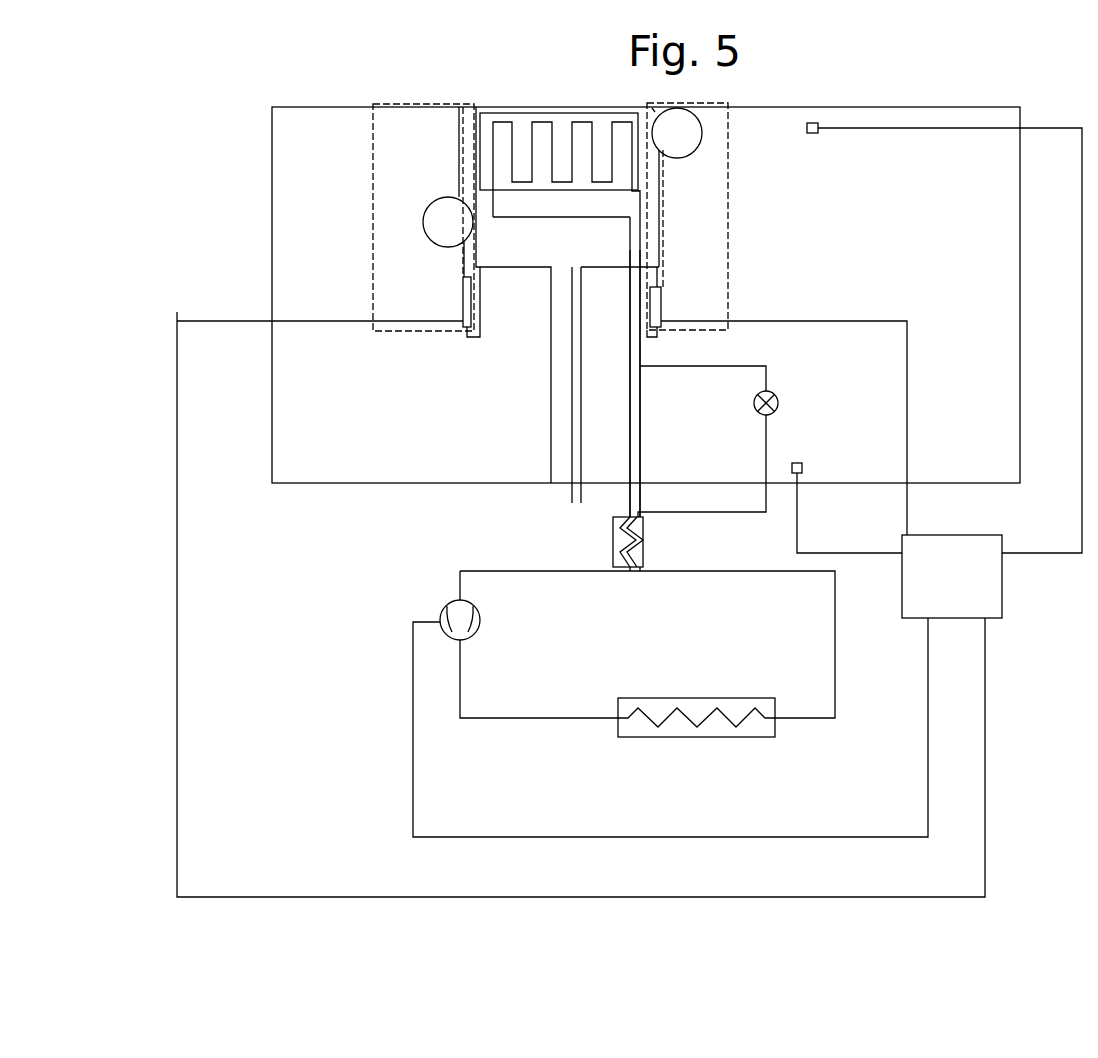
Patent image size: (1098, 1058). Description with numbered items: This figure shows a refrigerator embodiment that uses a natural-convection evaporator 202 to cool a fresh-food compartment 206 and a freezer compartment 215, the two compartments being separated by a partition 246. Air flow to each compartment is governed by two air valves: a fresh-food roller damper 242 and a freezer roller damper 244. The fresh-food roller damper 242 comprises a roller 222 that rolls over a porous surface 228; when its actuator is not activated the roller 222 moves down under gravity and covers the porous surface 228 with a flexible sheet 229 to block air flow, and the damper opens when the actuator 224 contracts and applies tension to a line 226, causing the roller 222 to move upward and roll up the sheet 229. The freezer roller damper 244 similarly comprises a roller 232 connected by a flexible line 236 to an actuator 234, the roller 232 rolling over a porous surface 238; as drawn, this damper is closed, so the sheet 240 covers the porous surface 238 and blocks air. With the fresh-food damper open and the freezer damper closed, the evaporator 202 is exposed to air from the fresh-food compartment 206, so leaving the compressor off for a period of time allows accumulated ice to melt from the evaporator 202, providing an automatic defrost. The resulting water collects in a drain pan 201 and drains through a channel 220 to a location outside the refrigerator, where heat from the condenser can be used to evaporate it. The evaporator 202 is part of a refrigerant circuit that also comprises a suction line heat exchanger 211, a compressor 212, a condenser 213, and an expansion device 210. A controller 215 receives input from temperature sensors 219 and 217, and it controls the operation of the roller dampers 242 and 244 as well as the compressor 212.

The drain pan 201 is at (560, 265).
The evaporator 202 is at (533, 188).
The fresh-food compartment 206 is at (887, 252).
The expansion device 210 is at (772, 413).
The suction line heat exchanger 211 is at (618, 540).
The compressor 212 is at (481, 628).
The condenser 213 is at (658, 698).
The controller 215 is at (946, 599).
The temperature sensor 217 is at (929, 338).
The temperature sensor 219 is at (802, 467).
The channel 220 is at (582, 388).
The roller 222 is at (685, 143).
The actuator 224 is at (662, 316).
The line 226 is at (659, 217).
The porous surface 228 is at (663, 183).
The flexible sheet 229 is at (661, 103).
The roller 232 is at (424, 216).
The actuator 234 is at (462, 301).
The flexible line 236 is at (462, 260).
The porous surface 238 is at (463, 158).
The sheet 240 is at (458, 183).
The fresh-food roller damper 242 is at (729, 266).
The freezer roller damper 244 is at (374, 192).
The partition 246 is at (549, 395).